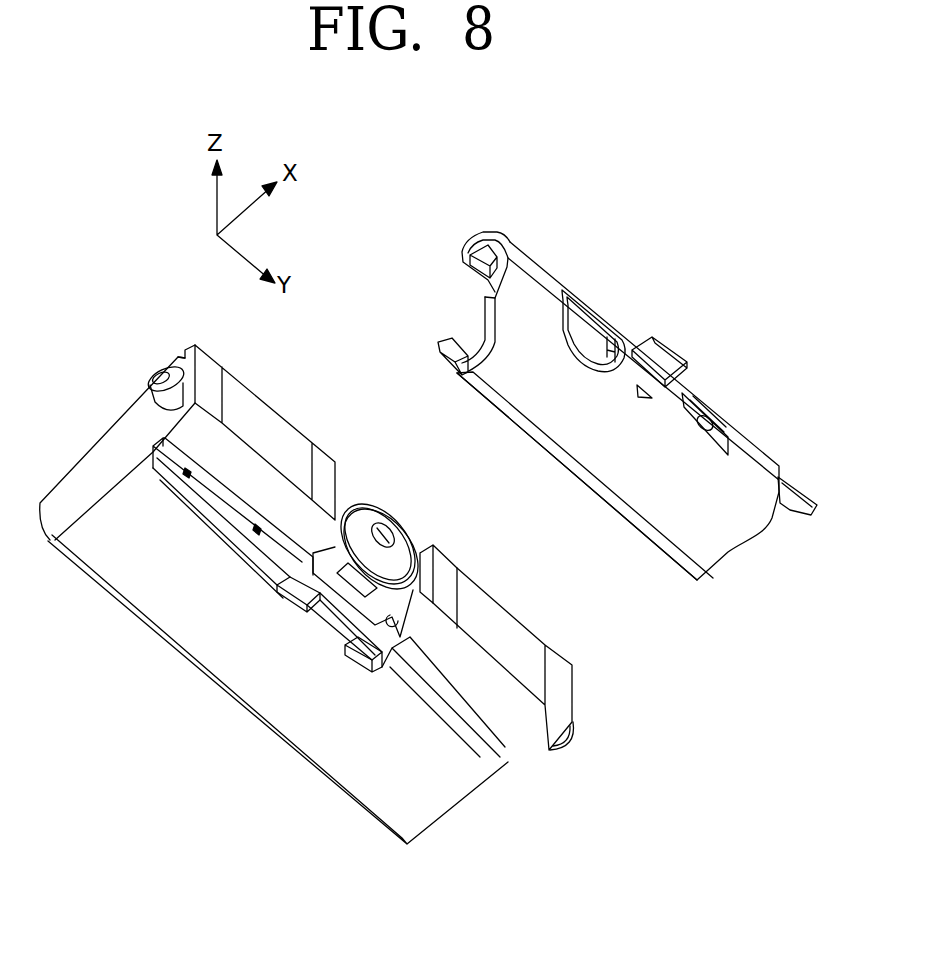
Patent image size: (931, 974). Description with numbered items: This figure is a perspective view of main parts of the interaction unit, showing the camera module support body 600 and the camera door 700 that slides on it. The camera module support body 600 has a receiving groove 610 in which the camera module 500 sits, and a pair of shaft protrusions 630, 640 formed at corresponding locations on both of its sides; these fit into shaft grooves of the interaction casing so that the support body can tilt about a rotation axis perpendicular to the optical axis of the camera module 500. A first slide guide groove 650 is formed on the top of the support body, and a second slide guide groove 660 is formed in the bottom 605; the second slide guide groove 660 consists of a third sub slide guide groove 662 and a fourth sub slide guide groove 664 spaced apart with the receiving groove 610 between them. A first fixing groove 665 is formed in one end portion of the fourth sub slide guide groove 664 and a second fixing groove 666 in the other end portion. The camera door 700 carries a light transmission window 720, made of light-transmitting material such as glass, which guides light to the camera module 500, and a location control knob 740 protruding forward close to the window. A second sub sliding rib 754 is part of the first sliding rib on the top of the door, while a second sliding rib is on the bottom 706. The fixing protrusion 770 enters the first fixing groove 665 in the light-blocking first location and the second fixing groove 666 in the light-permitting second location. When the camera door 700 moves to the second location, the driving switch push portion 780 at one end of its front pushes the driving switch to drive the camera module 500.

The camera module 500 is at (370, 513).
The camera module support body 600 is at (497, 822).
The bottom 605 is at (292, 711).
The receiving groove 610 is at (421, 600).
The shaft protrusion 630 is at (570, 741).
The shaft protrusion 640 is at (153, 378).
The first slide guide groove 650 is at (178, 347).
The second slide guide groove 660 is at (517, 757).
The third sub slide guide groove 662 is at (445, 690).
The fourth sub slide guide groove 664 is at (223, 500).
The first fixing groove 665 is at (171, 457).
The second fixing groove 666 is at (258, 566).
The camera door 700 is at (738, 562).
The bottom 706 is at (577, 467).
The light transmission window 720 is at (585, 330).
The location control knob 740 is at (660, 352).
The second sub sliding rib 754 is at (467, 272).
The fixing protrusion 770 is at (447, 345).
The driving switch push portion 780 is at (811, 516).